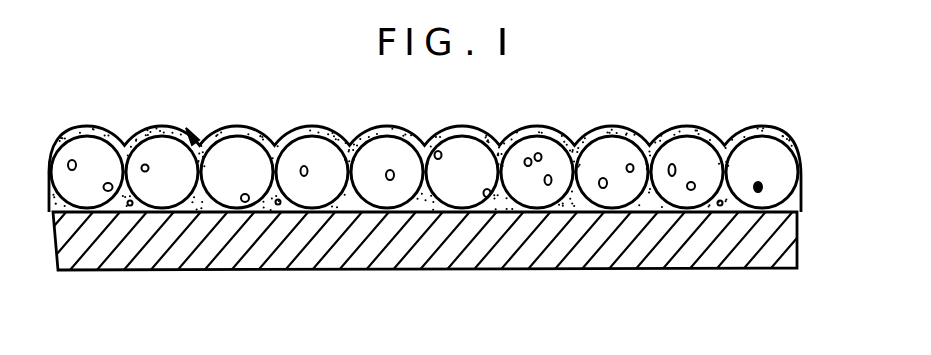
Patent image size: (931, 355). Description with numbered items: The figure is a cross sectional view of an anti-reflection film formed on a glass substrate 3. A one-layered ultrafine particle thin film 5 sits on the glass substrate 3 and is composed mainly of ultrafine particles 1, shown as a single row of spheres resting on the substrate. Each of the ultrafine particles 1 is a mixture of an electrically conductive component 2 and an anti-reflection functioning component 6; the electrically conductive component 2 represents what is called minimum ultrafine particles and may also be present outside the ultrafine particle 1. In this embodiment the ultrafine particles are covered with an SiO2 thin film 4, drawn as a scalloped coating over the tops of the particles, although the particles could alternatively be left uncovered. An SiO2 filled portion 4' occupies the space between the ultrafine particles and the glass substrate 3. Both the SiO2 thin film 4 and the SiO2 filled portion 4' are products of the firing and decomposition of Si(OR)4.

The ultrafine particles 1 is at (103, 138).
The electrically conductive component 2 is at (145, 167).
The glass substrate 3 is at (150, 257).
The SiO2 thin film 4 is at (425, 135).
The SiO2 filled portion 4' is at (389, 252).
The ultrafine particle thin film 5 is at (806, 134).
The anti-reflection functioning component 6 is at (82, 157).